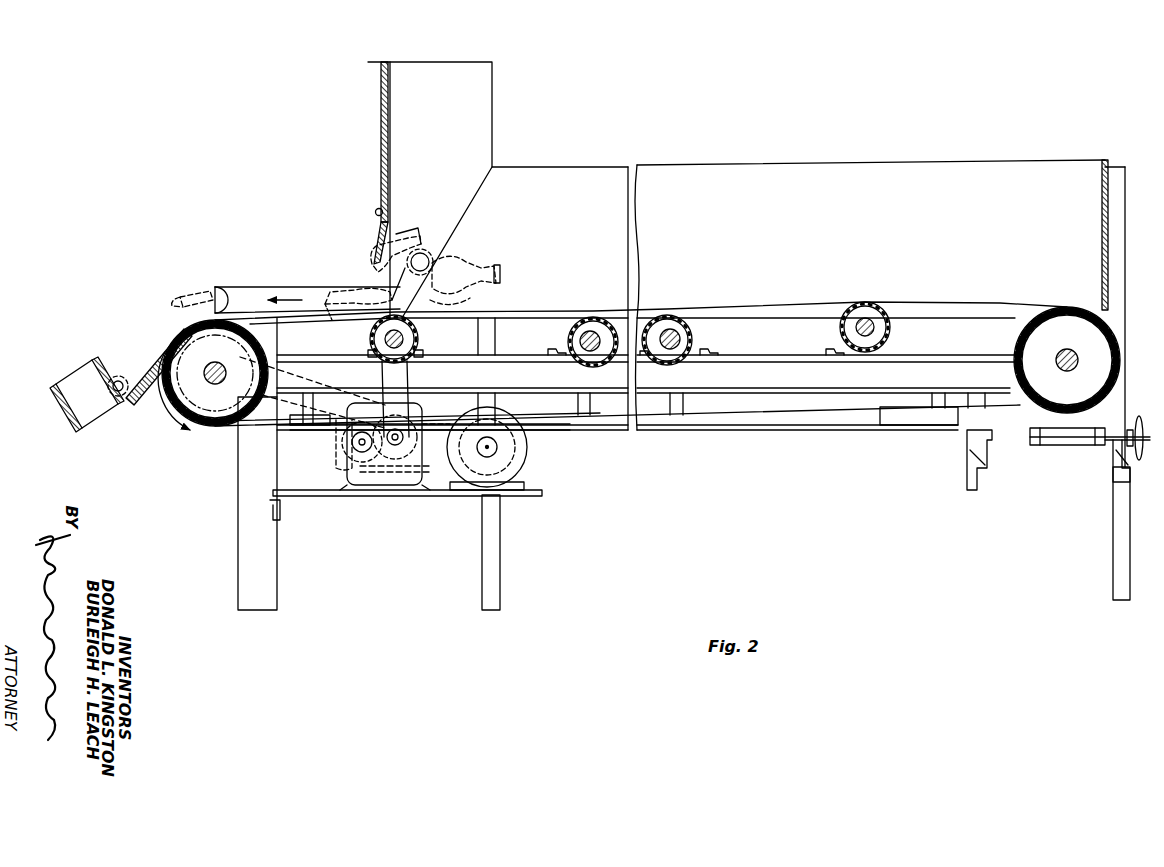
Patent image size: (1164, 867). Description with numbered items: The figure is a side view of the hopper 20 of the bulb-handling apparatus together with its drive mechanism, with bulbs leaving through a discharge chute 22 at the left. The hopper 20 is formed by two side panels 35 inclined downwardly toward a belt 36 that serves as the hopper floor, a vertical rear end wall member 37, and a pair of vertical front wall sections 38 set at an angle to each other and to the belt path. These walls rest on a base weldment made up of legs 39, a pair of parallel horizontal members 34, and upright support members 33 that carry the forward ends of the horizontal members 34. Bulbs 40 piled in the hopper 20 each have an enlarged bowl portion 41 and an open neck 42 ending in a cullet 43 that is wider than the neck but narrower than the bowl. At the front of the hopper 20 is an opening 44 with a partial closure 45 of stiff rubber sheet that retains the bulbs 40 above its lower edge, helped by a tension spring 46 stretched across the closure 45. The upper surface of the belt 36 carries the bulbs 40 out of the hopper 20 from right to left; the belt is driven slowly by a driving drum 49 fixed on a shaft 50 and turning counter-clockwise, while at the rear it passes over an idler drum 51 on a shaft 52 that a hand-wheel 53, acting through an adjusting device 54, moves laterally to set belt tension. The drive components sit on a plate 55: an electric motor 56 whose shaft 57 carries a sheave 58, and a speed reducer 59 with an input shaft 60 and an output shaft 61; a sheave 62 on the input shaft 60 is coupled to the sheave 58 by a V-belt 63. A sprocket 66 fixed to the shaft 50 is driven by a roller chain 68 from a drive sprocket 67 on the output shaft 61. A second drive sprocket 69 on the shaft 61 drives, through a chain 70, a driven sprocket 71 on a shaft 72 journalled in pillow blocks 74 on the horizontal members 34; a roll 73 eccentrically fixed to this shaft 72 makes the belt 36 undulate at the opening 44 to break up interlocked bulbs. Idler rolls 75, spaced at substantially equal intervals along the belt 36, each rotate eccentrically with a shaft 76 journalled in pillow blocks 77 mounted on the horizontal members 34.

The hopper 20 is at (781, 133).
The discharge chute 22 is at (120, 323).
The upright support members 33 is at (278, 588).
The horizontal members 34 is at (811, 378).
The side panels 35 is at (870, 232).
The belt 36 is at (995, 304).
The rear end wall member 37 is at (1100, 190).
The front wall sections 38 is at (446, 128).
The legs 39 is at (502, 582).
The bulbs 40 is at (486, 237).
The bowl portion 41 is at (428, 252).
The neck 42 is at (481, 264).
The cullet 43 is at (501, 273).
The opening 44 is at (411, 190).
The partial closure 45 is at (380, 228).
The tension spring 46 is at (377, 209).
The driving drum 49 is at (196, 422).
The shaft 50 is at (228, 368).
The idler drum 51 is at (1016, 343).
The shaft 52 is at (1067, 371).
The hand-wheel 53 is at (1143, 416).
The adjusting device 54 is at (1058, 457).
The plate 55 is at (405, 497).
The electric motor 56 is at (507, 415).
The motor shaft 57 is at (495, 449).
The sheave 58 is at (460, 432).
The speed reducer 59 is at (345, 478).
The input shaft 60 is at (358, 438).
The output shaft 61 is at (404, 437).
The sheave 62 is at (390, 450).
The V-belt 63 is at (442, 473).
The sprocket 66 is at (262, 410).
The drive sprocket 67 is at (346, 448).
The roller chain 68 is at (322, 382).
The second drive sprocket 69 is at (394, 426).
The chain 70 is at (410, 372).
The driven sprocket 71 is at (410, 363).
The shaft 72 is at (373, 345).
The roll 73 is at (420, 338).
The pillow blocks 74 is at (368, 353).
The idler rolls 75 is at (600, 320).
The shaft 76 is at (584, 352).
The pillow blocks 77 is at (556, 348).